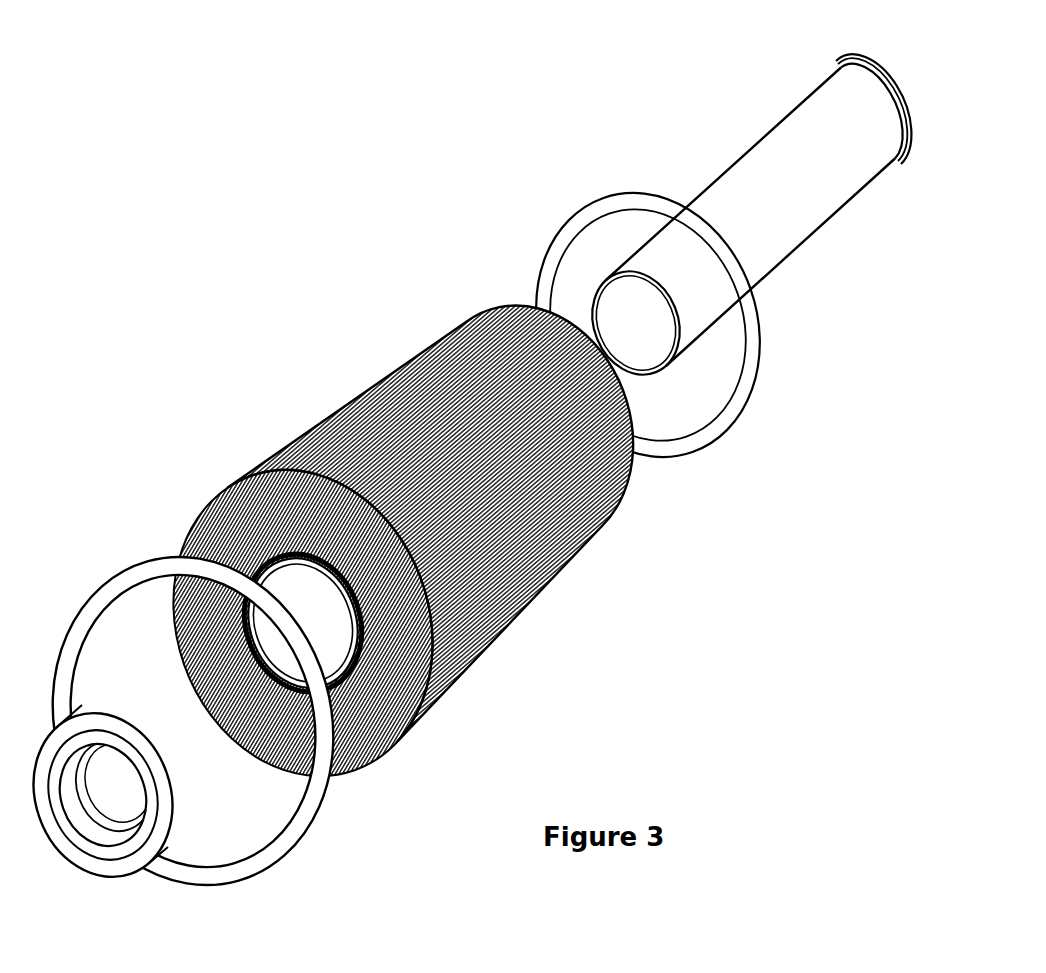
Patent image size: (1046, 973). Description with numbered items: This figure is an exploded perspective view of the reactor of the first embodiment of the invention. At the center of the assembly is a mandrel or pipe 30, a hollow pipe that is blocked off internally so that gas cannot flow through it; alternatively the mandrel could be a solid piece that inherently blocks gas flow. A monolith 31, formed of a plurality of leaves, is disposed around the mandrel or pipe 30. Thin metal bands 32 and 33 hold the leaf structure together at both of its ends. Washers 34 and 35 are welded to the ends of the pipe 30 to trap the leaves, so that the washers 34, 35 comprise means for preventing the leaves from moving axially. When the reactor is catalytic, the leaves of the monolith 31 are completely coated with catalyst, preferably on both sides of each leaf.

The mandrel or pipe 30 is at (785, 208).
The monolith 31 is at (490, 630).
The thin metal band 32 is at (733, 400).
The thin metal band 33 is at (307, 823).
The washer 34 is at (850, 70).
The washer 35 is at (103, 862).